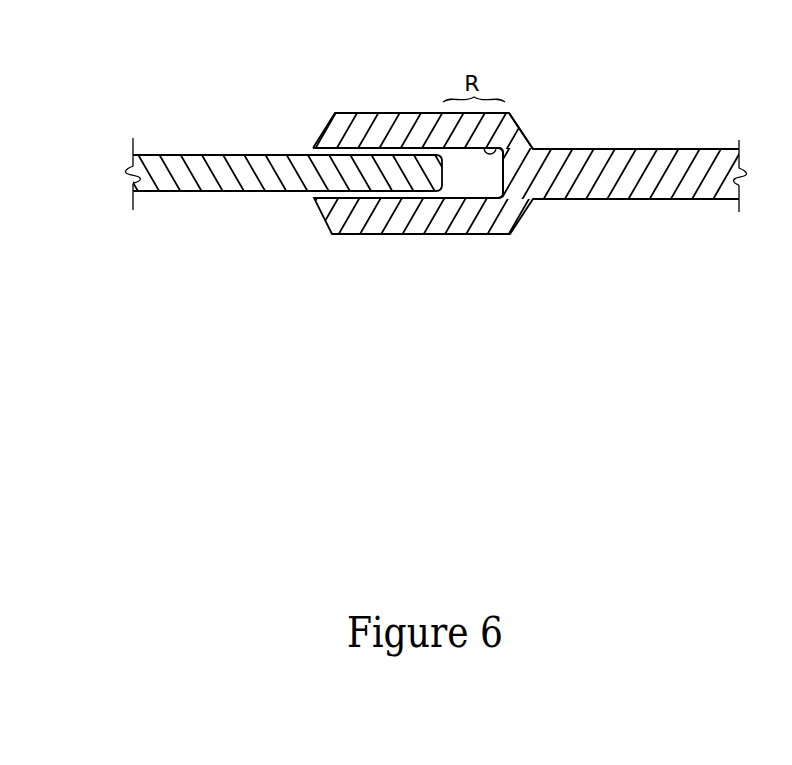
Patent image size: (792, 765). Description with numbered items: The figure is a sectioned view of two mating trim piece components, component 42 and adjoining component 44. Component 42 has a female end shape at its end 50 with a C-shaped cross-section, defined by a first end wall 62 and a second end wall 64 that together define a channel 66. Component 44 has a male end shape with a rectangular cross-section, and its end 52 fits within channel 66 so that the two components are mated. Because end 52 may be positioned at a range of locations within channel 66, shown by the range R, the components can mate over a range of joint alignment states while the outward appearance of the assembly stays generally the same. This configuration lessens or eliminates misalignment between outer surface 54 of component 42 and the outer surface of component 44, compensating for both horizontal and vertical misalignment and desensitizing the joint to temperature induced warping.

The component 42 is at (665, 158).
The component 44 is at (220, 183).
The end 50 is at (322, 128).
The end 52 is at (450, 173).
The outer surface 54 is at (547, 147).
The first end wall 62 is at (366, 120).
The second end wall 64 is at (363, 226).
The channel 66 is at (512, 116).